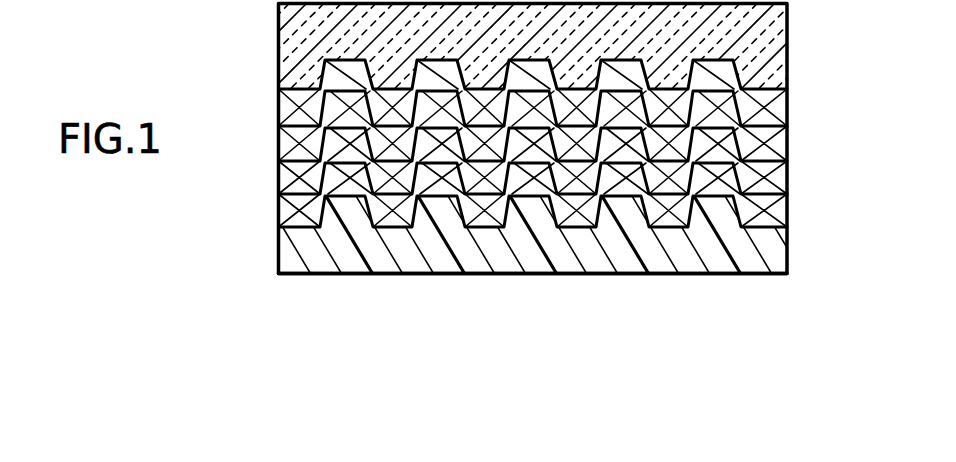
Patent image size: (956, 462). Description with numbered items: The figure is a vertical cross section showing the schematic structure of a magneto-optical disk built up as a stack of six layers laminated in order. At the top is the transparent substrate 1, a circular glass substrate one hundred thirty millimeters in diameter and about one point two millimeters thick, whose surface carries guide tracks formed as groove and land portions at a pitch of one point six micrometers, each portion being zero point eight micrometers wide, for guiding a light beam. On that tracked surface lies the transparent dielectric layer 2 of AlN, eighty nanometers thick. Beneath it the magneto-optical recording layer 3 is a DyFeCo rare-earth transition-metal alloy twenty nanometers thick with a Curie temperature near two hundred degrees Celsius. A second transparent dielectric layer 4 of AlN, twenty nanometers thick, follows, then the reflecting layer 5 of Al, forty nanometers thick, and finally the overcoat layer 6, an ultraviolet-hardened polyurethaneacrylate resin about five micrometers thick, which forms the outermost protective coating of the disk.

The transparent substrate 1 is at (788, 33).
The transparent dielectric layer 2 is at (788, 103).
The magneto-optical recording layer 3 is at (788, 145).
The transparent dielectric layer 4 is at (788, 177).
The reflecting layer 5 is at (788, 208).
The overcoat layer 6 is at (788, 247).